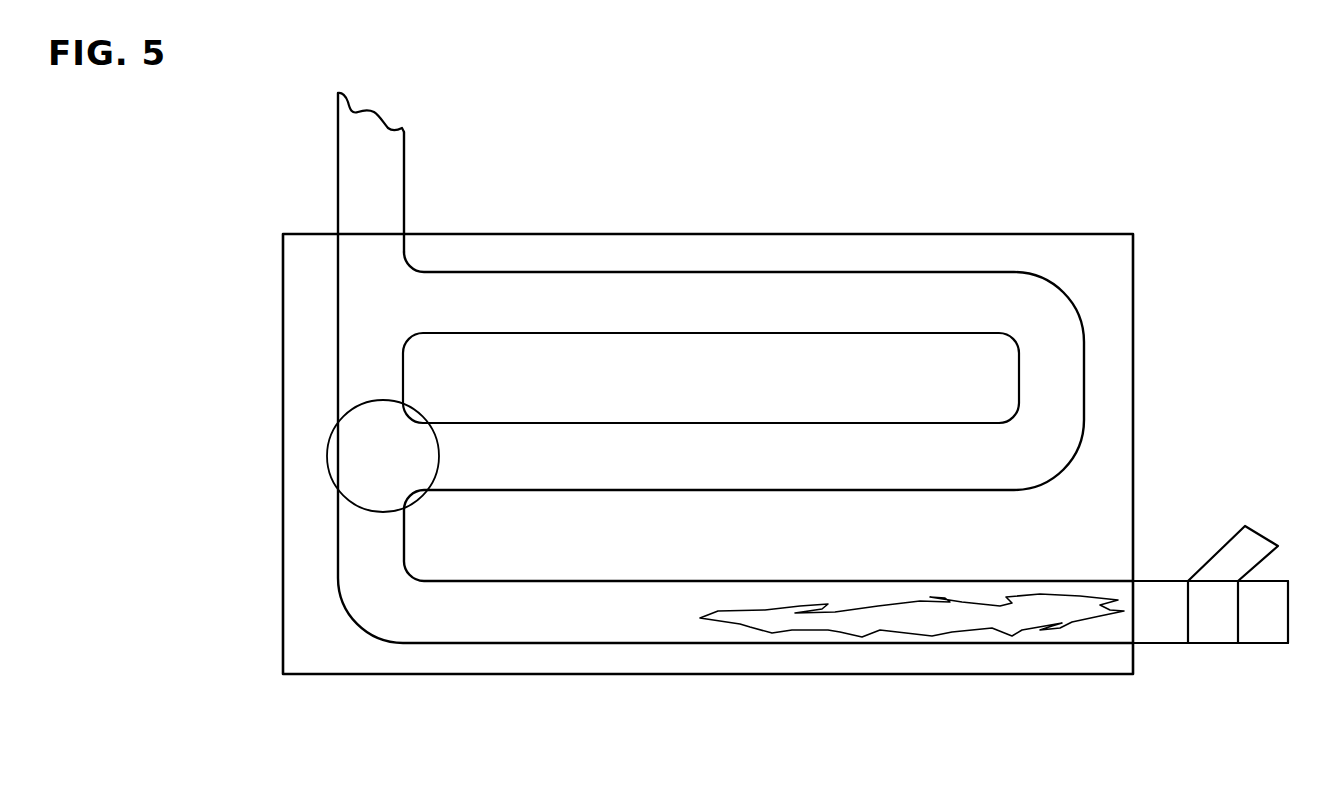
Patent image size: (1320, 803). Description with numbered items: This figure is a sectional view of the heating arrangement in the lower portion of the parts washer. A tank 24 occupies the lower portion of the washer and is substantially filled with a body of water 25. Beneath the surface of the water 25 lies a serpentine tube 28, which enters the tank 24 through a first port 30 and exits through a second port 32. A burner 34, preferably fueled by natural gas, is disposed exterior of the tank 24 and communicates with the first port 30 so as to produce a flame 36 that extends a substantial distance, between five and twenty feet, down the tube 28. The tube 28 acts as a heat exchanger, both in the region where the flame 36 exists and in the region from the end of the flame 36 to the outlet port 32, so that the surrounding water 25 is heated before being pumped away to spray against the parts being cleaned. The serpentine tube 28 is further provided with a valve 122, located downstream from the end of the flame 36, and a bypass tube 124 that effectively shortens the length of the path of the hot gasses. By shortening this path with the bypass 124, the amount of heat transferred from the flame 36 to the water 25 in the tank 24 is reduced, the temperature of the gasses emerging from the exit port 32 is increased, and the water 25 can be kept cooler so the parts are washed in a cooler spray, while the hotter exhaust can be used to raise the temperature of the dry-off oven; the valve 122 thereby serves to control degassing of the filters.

The tank 24 is at (605, 675).
The bypass tube 124 is at (336, 302).
The second port 32 is at (404, 196).
The serpentine tube 28 is at (540, 491).
The water 25 is at (685, 396).
The valve 122 is at (327, 461).
The first port 30 is at (1114, 580).
The burner 34 is at (1272, 640).
The flame 36 is at (1010, 623).